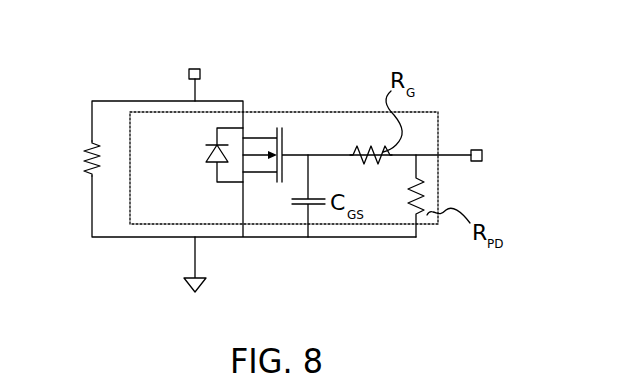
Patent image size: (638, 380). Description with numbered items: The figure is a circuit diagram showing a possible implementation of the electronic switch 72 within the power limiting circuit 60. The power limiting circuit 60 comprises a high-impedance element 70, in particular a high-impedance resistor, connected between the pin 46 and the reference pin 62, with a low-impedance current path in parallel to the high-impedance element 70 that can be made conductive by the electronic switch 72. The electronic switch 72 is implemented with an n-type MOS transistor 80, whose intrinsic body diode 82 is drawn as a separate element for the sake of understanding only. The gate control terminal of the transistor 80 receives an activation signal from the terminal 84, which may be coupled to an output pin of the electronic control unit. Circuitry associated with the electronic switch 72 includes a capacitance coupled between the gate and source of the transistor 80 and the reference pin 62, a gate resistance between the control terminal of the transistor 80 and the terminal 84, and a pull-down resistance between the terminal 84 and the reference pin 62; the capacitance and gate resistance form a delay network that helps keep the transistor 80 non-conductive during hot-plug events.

The power limiting circuit 60 is at (92, 67).
The pin 46 is at (191, 68).
The high-impedance element 70 is at (94, 148).
The reference pin 62 is at (186, 280).
The electronic switch 72 is at (313, 118).
The n-type MOS transistor 80 is at (258, 126).
The intrinsic body diode 82 is at (204, 169).
The terminal 84 is at (477, 150).